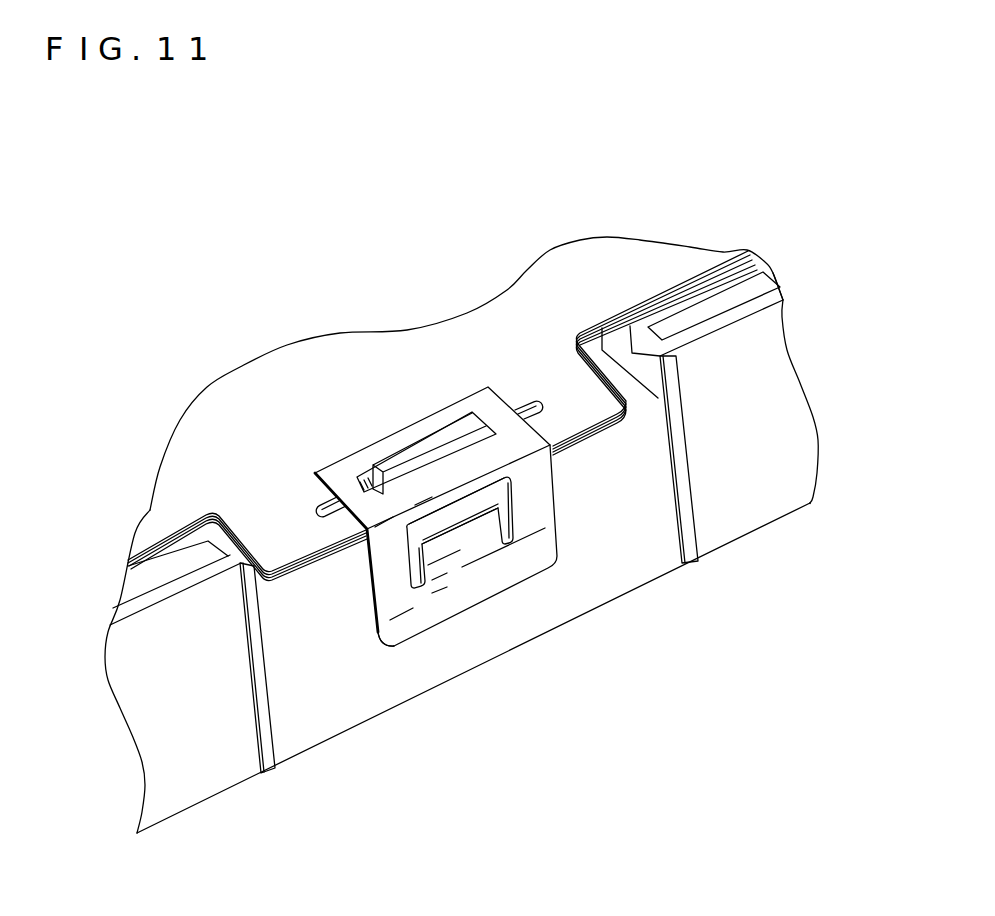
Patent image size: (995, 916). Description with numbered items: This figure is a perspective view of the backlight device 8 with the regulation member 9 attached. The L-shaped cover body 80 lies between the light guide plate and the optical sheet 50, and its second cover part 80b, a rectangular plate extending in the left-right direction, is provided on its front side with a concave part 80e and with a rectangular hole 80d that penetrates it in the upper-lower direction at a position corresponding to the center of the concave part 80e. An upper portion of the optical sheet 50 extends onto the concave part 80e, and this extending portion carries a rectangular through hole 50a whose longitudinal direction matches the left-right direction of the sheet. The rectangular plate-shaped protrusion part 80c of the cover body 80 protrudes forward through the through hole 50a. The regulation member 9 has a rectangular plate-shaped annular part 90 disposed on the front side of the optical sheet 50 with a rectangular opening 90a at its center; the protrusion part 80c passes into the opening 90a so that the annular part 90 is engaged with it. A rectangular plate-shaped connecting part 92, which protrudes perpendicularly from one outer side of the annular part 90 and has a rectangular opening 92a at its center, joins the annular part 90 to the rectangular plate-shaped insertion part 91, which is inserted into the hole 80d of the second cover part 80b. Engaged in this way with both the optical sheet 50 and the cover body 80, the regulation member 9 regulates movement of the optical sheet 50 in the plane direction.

The backlight device 8 is at (858, 183).
The regulation member 9 is at (369, 613).
The optical sheet 50 is at (623, 270).
The through hole 50a is at (527, 403).
The cover body 80 is at (757, 566).
The second cover part 80b is at (397, 690).
The protrusion part 80c is at (392, 460).
The hole 80d is at (493, 530).
The concave part 80e is at (657, 398).
The annular part 90 is at (427, 423).
The opening 90a is at (370, 480).
The insertion part 91 is at (455, 543).
The connecting part 92 is at (543, 517).
The opening 92a is at (366, 560).